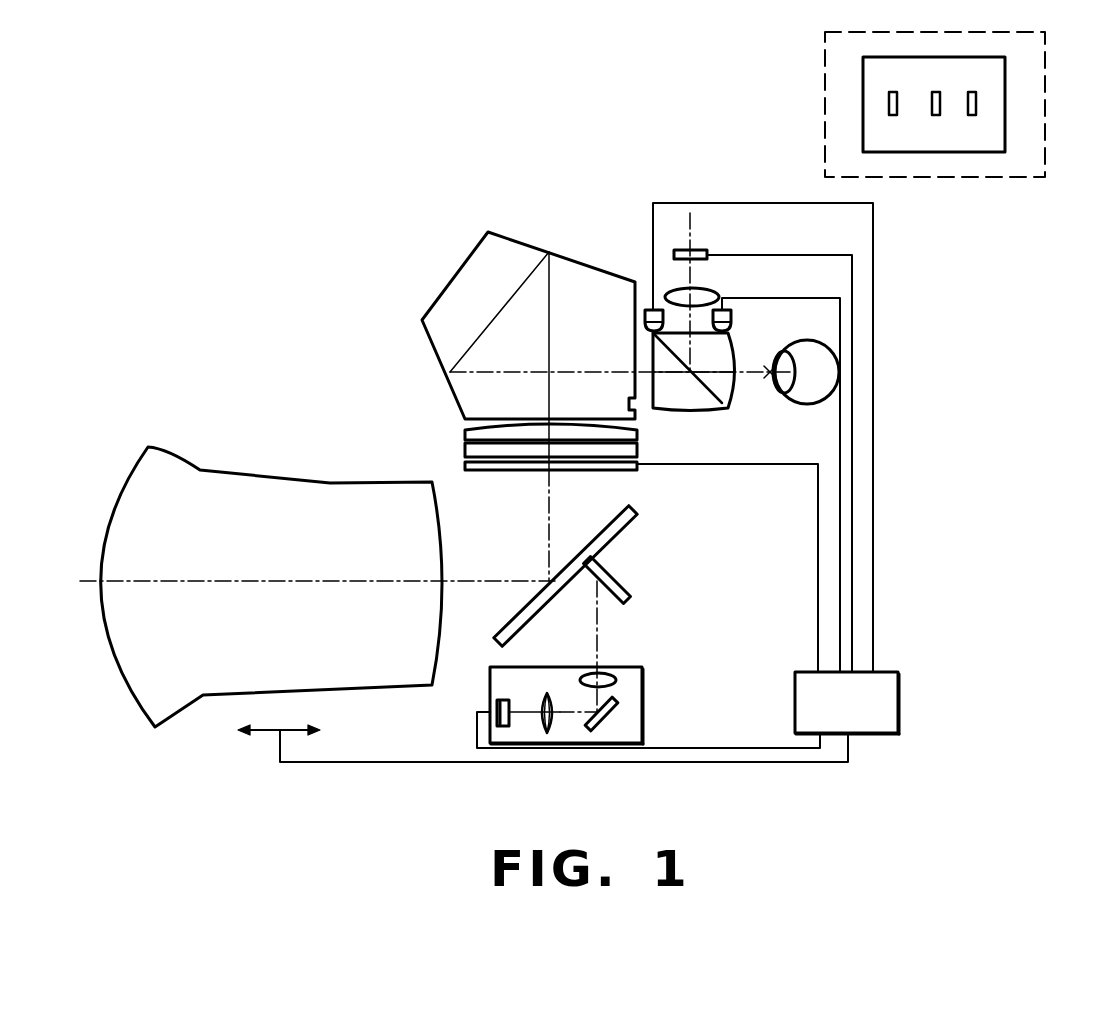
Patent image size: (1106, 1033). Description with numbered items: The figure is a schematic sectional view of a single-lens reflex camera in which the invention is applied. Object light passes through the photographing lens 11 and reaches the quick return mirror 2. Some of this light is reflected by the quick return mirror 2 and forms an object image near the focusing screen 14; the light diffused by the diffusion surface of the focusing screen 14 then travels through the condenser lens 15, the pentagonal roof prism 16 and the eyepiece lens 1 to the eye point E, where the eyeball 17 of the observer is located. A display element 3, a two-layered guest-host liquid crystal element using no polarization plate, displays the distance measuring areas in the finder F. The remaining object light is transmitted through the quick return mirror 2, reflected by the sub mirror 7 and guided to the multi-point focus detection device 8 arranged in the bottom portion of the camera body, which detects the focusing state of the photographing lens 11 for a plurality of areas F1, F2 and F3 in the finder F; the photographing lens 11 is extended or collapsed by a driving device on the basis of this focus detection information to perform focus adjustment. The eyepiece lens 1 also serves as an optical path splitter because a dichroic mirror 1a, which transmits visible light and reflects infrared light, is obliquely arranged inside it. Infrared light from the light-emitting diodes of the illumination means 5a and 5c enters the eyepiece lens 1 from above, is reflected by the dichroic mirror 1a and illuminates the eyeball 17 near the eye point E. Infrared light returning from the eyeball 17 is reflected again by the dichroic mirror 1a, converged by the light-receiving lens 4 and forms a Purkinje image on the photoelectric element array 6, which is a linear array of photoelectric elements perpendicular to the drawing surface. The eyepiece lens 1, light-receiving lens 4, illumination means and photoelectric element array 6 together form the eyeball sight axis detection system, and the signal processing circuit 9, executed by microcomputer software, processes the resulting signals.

The eyepiece lens 1 is at (737, 350).
The dichroic mirror 1a is at (707, 393).
The quick return mirror 2 is at (607, 542).
The display element 3 is at (637, 468).
The light-receiving lens 4 is at (712, 293).
The illumination means 5a is at (648, 310).
The illumination means 5c is at (731, 318).
The photoelectric element array 6 is at (708, 252).
The sub mirror 7 is at (630, 598).
The focus detection device 8 is at (642, 700).
The signal processing circuit 9 is at (900, 702).
The photographing lens 11 is at (433, 433).
The focusing screen 14 is at (465, 447).
The condenser lens 15 is at (465, 437).
The pentagonal roof prism 16 is at (452, 285).
The eyeball 17 is at (808, 398).
The eye point E is at (770, 370).
The finder F is at (1005, 92).
The focus detection area F1 is at (893, 115).
The focus detection area F2 is at (936, 115).
The focus detection area F3 is at (972, 115).